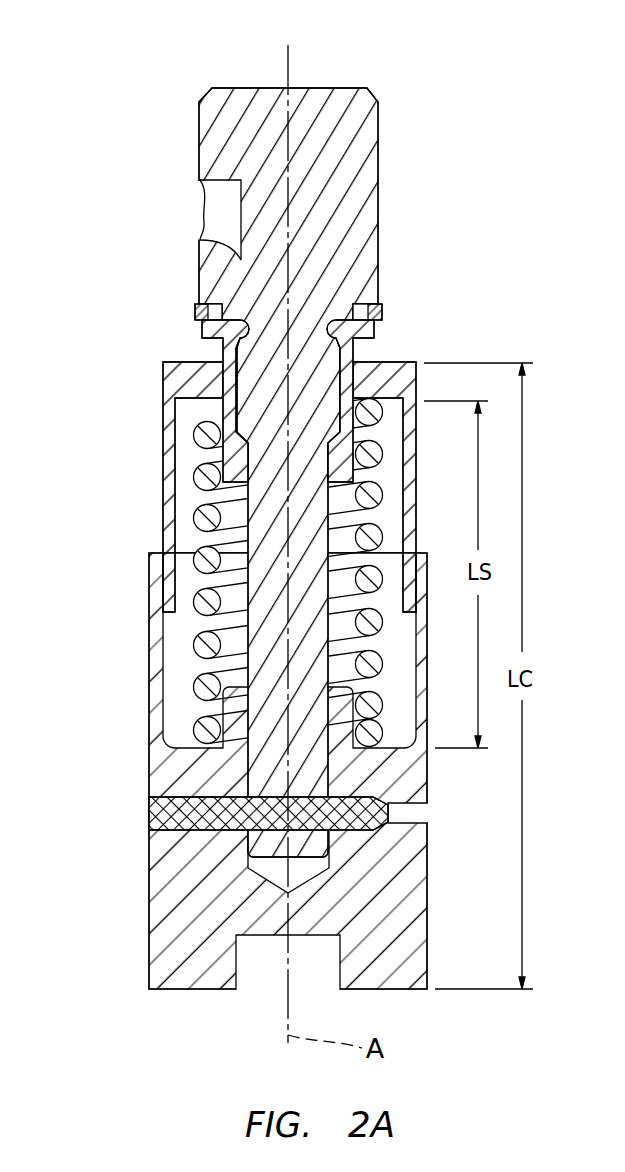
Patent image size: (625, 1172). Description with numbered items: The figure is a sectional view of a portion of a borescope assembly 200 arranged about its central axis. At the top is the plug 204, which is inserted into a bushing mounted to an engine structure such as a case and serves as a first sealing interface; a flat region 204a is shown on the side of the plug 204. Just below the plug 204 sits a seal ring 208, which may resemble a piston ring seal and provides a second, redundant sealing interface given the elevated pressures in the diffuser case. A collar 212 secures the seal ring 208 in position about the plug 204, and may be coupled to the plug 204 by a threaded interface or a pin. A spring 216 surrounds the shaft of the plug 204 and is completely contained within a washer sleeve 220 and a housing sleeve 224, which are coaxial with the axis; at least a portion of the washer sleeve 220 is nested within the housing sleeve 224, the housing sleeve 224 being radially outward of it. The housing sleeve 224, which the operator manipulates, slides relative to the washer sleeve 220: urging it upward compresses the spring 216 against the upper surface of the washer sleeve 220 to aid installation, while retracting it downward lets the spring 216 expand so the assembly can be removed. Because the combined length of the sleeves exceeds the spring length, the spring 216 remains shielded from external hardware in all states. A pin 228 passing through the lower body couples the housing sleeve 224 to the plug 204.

The borescope assembly 200 is at (295, 499).
The plug 204 is at (213, 133).
The flat surface of plunger head 204a is at (215, 207).
The seal ring 208 is at (195, 310).
The collar 212 is at (203, 327).
The spring 216 is at (193, 650).
The washer sleeve 220 is at (163, 408).
The housing sleeve 224 is at (148, 753).
The pin 228 is at (148, 812).